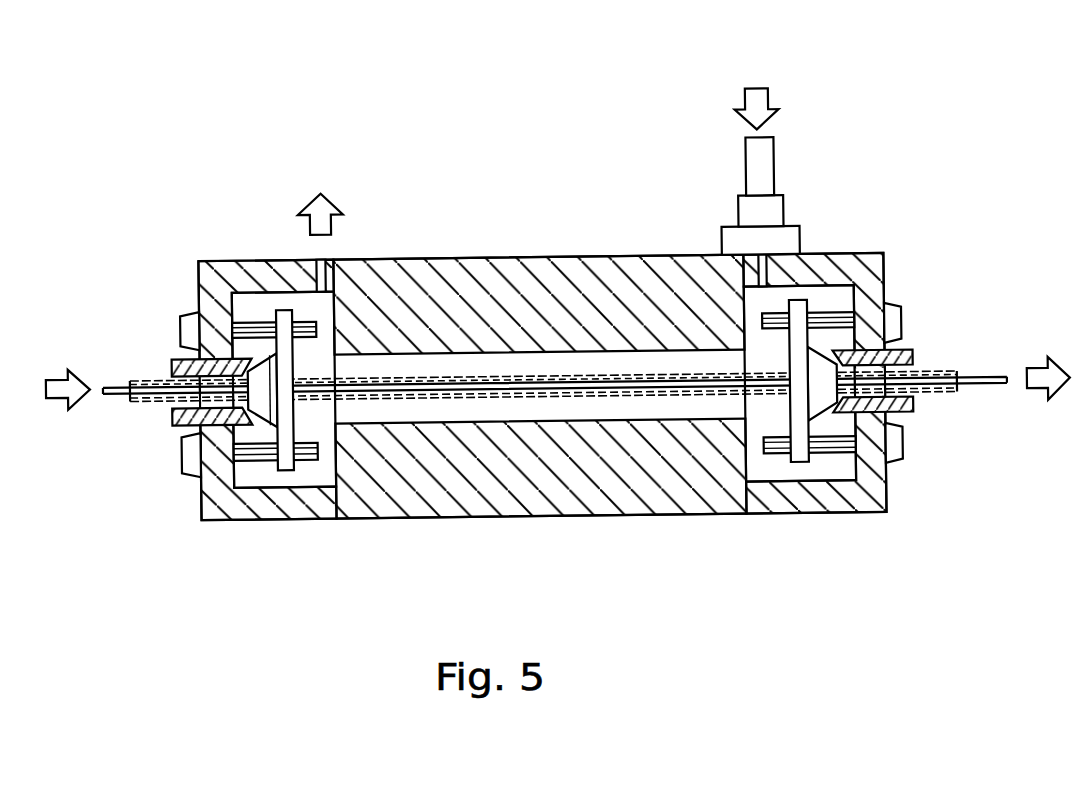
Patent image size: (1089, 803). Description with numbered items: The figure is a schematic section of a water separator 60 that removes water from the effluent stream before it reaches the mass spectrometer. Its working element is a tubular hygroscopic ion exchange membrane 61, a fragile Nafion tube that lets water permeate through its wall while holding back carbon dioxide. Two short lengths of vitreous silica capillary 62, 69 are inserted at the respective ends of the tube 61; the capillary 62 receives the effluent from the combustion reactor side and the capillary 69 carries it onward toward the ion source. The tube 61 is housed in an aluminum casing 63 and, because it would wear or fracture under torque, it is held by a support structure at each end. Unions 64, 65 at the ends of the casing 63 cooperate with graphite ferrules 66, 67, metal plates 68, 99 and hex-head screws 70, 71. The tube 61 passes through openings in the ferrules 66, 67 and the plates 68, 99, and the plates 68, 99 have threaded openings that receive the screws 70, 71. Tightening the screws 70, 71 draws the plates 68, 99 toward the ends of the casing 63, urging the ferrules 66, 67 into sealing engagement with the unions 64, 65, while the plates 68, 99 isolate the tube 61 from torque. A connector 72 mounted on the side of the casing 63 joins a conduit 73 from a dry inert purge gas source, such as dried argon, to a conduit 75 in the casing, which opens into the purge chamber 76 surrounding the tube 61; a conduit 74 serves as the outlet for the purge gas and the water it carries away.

The water separator 60 is at (496, 148).
The tubular hygroscopic ion exchange membrane 61 is at (455, 414).
The vitreous silica capillary 62 is at (120, 390).
The casing 63 is at (702, 487).
The union 64 is at (172, 420).
The union 65 is at (913, 407).
The graphite ferrule 66 is at (255, 447).
The graphite ferrule 67 is at (890, 444).
The metal plate 68 is at (297, 467).
The vitreous silica capillary 69 is at (967, 377).
The hex-head screw 70 is at (264, 466).
The hex-head screw 71 is at (822, 445).
The connector 72 is at (786, 216).
The conduit 73 is at (777, 173).
The conduit 74 is at (327, 256).
The conduit 75 is at (806, 256).
The purge chamber 76 is at (595, 408).
The metal plate 99 is at (797, 460).